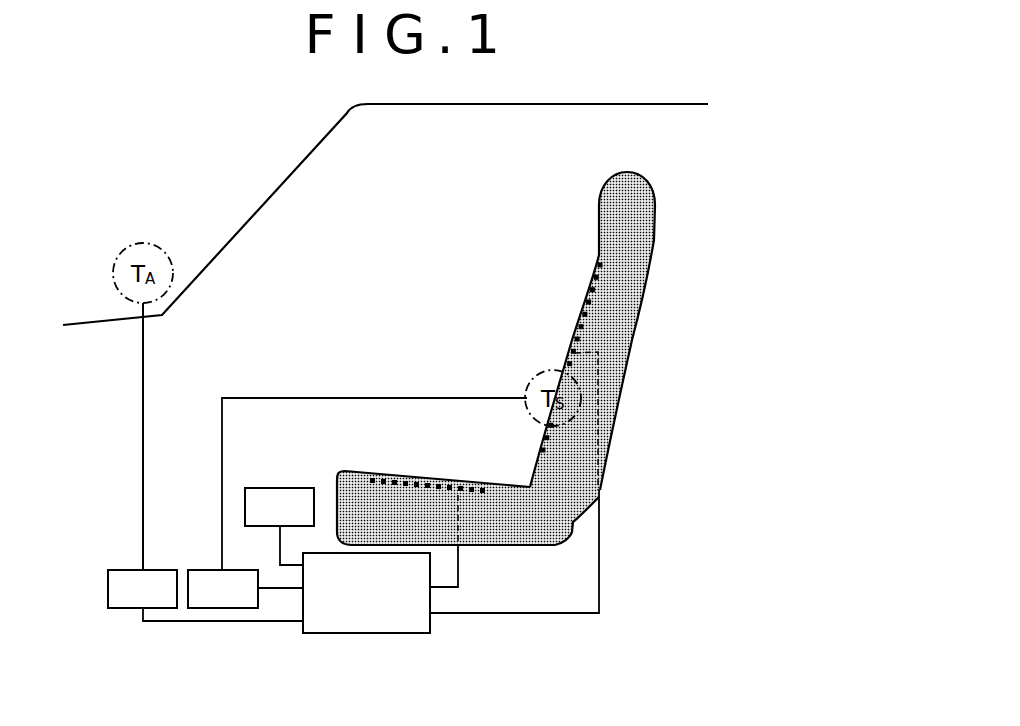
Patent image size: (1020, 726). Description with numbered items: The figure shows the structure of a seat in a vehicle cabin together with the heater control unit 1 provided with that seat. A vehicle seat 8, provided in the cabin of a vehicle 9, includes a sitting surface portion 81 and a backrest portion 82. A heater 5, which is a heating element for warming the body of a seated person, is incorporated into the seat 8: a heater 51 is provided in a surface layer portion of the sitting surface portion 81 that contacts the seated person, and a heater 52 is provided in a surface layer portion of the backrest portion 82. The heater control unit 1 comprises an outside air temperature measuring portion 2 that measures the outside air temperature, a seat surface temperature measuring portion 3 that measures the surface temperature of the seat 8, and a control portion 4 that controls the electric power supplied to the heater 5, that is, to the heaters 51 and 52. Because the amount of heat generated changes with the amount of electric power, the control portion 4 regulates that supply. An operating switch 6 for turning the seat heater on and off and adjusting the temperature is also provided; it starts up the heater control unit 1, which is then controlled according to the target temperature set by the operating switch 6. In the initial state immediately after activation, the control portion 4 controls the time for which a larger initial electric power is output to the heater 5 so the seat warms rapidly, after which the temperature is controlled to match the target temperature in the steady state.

The heater control unit 1 is at (238, 661).
The outside air temperature measuring portion 2 is at (205, 595).
The seat surface temperature measuring portion 3 is at (357, 503).
The control portion 4 is at (366, 593).
The heater 5 is at (548, 438).
The heater 51 is at (482, 495).
The heater 52 is at (598, 322).
The operating switch 6 is at (279, 526).
The vehicle seat 8 is at (477, 332).
The sitting surface portion 81 is at (342, 472).
The backrest portion 82 is at (598, 238).
The vehicle 9 is at (293, 173).